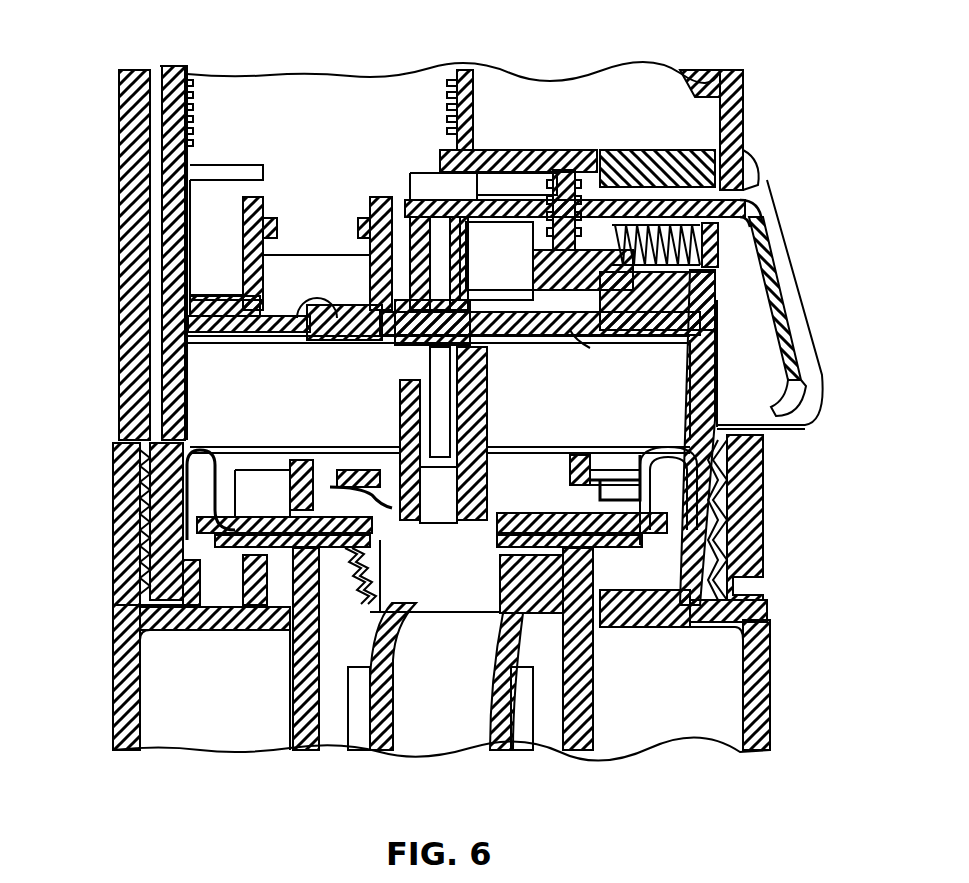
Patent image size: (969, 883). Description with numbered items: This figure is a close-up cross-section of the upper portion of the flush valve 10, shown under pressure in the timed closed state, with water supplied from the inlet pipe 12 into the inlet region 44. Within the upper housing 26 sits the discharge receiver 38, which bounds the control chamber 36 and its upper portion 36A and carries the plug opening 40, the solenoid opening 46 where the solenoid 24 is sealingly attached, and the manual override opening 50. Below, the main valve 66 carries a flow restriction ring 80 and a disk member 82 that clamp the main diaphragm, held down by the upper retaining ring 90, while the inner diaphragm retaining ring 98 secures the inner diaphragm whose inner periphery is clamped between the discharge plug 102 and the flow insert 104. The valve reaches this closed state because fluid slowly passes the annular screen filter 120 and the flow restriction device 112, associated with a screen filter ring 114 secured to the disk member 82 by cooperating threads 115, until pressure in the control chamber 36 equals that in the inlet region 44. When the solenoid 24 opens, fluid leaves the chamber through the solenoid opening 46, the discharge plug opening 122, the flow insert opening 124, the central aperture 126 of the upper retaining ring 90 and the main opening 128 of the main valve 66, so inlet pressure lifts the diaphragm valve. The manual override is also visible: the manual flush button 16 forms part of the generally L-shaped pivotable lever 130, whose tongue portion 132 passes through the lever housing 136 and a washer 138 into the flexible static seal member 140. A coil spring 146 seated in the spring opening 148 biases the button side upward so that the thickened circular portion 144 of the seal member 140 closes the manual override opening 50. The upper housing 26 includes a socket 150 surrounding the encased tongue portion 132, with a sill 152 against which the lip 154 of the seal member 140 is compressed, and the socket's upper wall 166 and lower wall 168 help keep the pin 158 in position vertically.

The flush valve 10 is at (95, 272).
The inlet pipe 12 is at (285, 745).
The manual flush button 16 is at (785, 258).
The solenoid 24 is at (305, 114).
The upper housing 26 is at (152, 388).
The control chamber 36 is at (165, 365).
The upper portion of the control chamber 36A is at (520, 254).
The discharge receiver 38 is at (242, 295).
The plug opening 40 is at (297, 322).
The inlet region 44 is at (720, 715).
The solenoid opening 46 is at (268, 270).
The manual override opening 50 is at (370, 272).
The main valve 66 is at (500, 690).
The flow restriction ring 80 is at (292, 640).
The disk member 82 is at (748, 520).
The upper retaining ring 90 is at (500, 530).
The inner diaphragm retaining ring 98 is at (350, 470).
The discharge plug 102 is at (487, 384).
The flow insert 104 is at (470, 455).
The flow restriction device 112 is at (617, 470).
The screen filter ring 114 is at (590, 458).
The cooperating threads 115 is at (232, 470).
The annular screen filter 120 is at (740, 480).
The discharge plug opening 122 is at (390, 366).
The flow insert opening 124 is at (432, 512).
The central aperture 126 is at (365, 590).
The main opening 128 is at (493, 725).
The pivotable lever 130 is at (755, 200).
The tongue portion 132 is at (488, 185).
The lever housing 136 is at (740, 150).
The washer 138 is at (605, 160).
The flexible static seal member 140 is at (450, 170).
The circular portion 144 is at (410, 195).
The coil spring 146 is at (758, 225).
The spring opening 148 is at (705, 282).
The socket 150 is at (518, 180).
The sill 152 is at (585, 170).
The lip 154 is at (640, 175).
The pin 158 is at (530, 262).
The upper wall 166 is at (568, 165).
The lower wall 168 is at (585, 325).